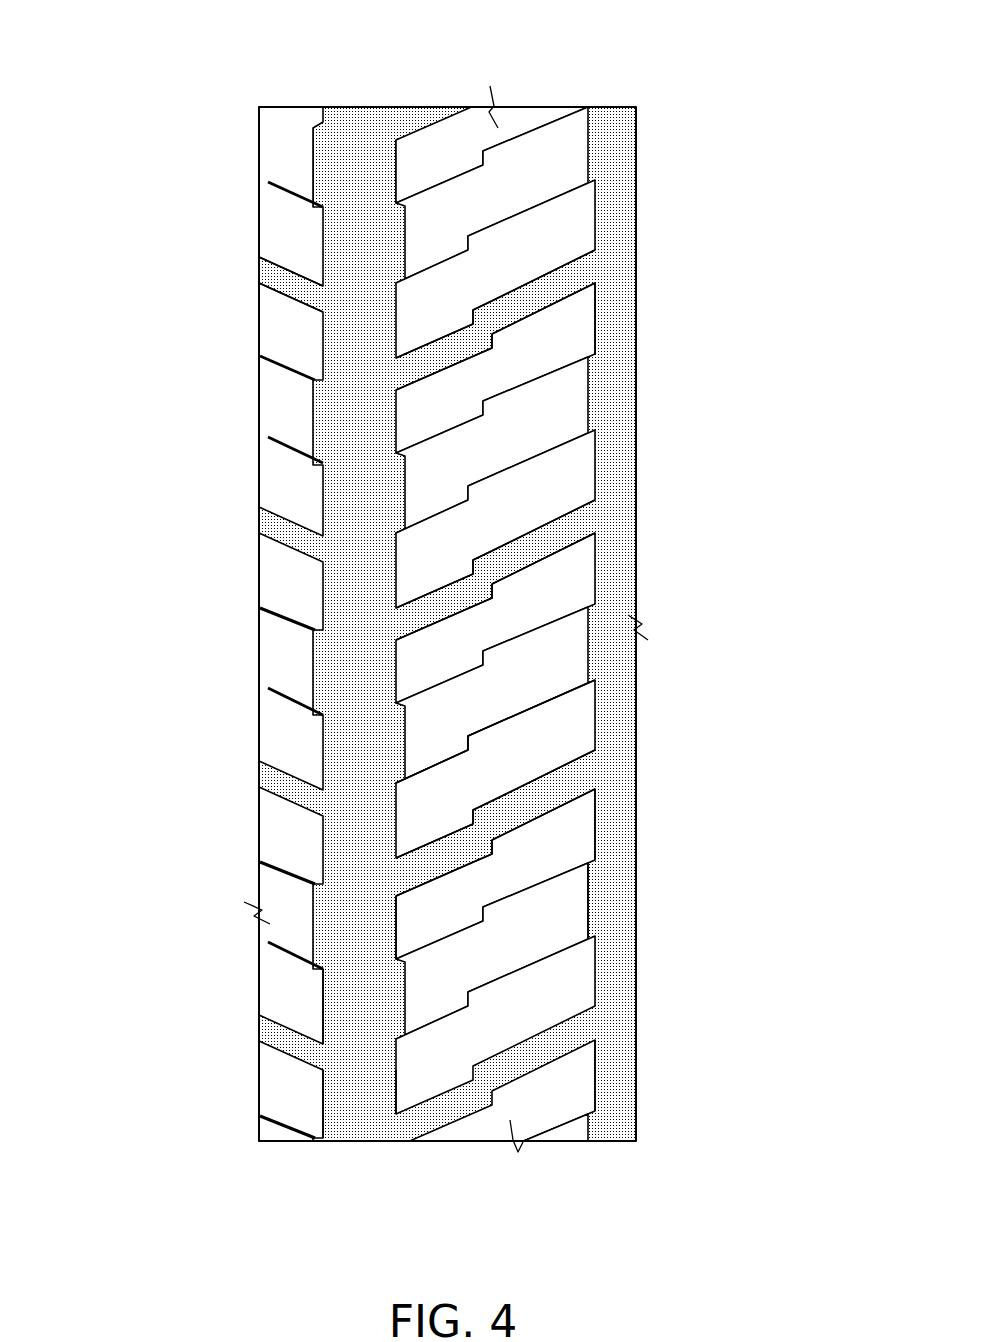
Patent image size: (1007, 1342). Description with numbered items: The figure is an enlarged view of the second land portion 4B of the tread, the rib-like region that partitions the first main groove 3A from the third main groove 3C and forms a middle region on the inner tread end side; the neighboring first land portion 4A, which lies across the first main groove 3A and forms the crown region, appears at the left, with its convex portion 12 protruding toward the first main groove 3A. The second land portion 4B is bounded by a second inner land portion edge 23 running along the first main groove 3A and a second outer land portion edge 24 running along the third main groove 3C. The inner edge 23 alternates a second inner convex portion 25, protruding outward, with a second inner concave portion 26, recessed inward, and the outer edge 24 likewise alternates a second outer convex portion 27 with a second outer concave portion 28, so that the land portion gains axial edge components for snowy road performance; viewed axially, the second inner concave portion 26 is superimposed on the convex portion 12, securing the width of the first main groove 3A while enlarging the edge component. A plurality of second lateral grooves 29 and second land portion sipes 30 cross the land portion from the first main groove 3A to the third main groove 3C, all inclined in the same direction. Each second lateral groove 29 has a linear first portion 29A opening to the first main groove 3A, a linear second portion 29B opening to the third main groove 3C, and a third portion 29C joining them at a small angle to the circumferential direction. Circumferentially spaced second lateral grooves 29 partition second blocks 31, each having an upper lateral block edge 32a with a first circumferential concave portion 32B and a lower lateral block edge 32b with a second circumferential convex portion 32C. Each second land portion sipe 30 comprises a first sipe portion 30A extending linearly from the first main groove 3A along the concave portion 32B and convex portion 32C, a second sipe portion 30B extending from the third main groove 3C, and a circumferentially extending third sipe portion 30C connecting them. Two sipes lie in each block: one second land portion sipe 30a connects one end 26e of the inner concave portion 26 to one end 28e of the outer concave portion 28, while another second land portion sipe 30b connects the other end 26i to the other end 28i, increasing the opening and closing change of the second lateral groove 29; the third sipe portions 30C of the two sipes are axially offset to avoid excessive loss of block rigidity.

The first main groove 3A is at (354, 1082).
The third main groove 3C is at (615, 1097).
The first land portion 4A is at (283, 160).
The second land portion 4B is at (437, 152).
The convex portion 12 is at (324, 233).
The second inner land portion edge 23 is at (370, 52).
The second outer land portion edge 24 is at (730, 300).
The second inner convex portion 25 is at (398, 167).
The second inner concave portion 26 is at (402, 250).
The one end of the second inner concave portion 26e is at (400, 962).
The another end of the second inner concave portion 26i is at (350, 1041).
The second outer convex portion 27 is at (596, 317).
The second outer concave portion 28 is at (597, 385).
The one end of the second outer concave portion 28e is at (590, 856).
The another end of the second outer concave portion 28i is at (590, 939).
The second lateral groove 29 is at (480, 1007).
The first portion 29A is at (437, 862).
The second portion 29B is at (530, 800).
The third portion 29C is at (487, 838).
The second land portion sipe 30 is at (332, 445).
The first sipe portion 30A is at (483, 533).
The second sipe portion 30B is at (540, 452).
The third sipe portion 30C is at (470, 497).
The one second land portion sipe 30a is at (430, 690).
The another second land portion sipe 30b is at (435, 770).
The second block 31 is at (433, 812).
The lateral block edge 32a is at (545, 307).
The first circumferential direction concave portion 32B is at (450, 373).
The second circumferential direction convex portion 32C is at (433, 600).
The lateral block edge 32b is at (550, 528).